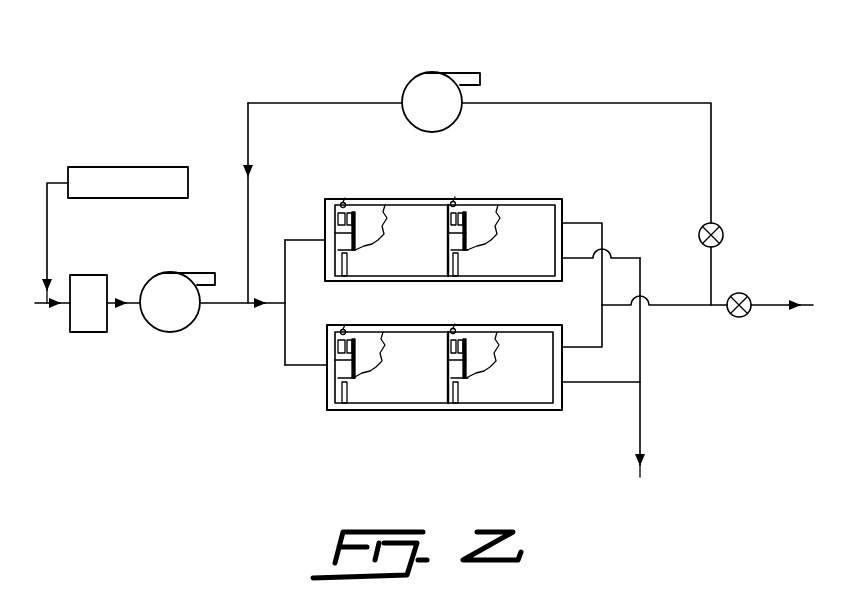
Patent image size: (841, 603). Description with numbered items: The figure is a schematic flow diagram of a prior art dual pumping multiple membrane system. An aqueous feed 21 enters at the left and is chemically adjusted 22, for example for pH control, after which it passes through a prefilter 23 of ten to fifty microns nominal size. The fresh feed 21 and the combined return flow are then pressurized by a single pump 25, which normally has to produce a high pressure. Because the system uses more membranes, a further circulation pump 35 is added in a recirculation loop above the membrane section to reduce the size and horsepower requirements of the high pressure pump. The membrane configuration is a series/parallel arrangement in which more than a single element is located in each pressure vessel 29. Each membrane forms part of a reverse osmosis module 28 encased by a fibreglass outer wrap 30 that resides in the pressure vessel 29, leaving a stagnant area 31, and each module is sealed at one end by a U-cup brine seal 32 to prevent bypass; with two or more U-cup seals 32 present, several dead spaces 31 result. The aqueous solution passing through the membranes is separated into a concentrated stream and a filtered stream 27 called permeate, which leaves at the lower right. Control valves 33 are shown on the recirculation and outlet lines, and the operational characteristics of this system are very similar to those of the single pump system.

The aqueous feed 21 is at (40, 307).
The chemical adjustment 22 is at (107, 187).
The prefilter 23 is at (88, 325).
The pump 25 is at (168, 320).
The filtered stream 27 is at (638, 423).
The reverse osmosis module 28 is at (408, 257).
The pressure vessel 29 is at (332, 412).
The fibreglass outer wrap 30 is at (375, 403).
The stagnant area 31 is at (467, 405).
The U-cup brine seal 32 is at (345, 203).
The control valve 33 is at (715, 223).
The circulation pump 35 is at (425, 92).